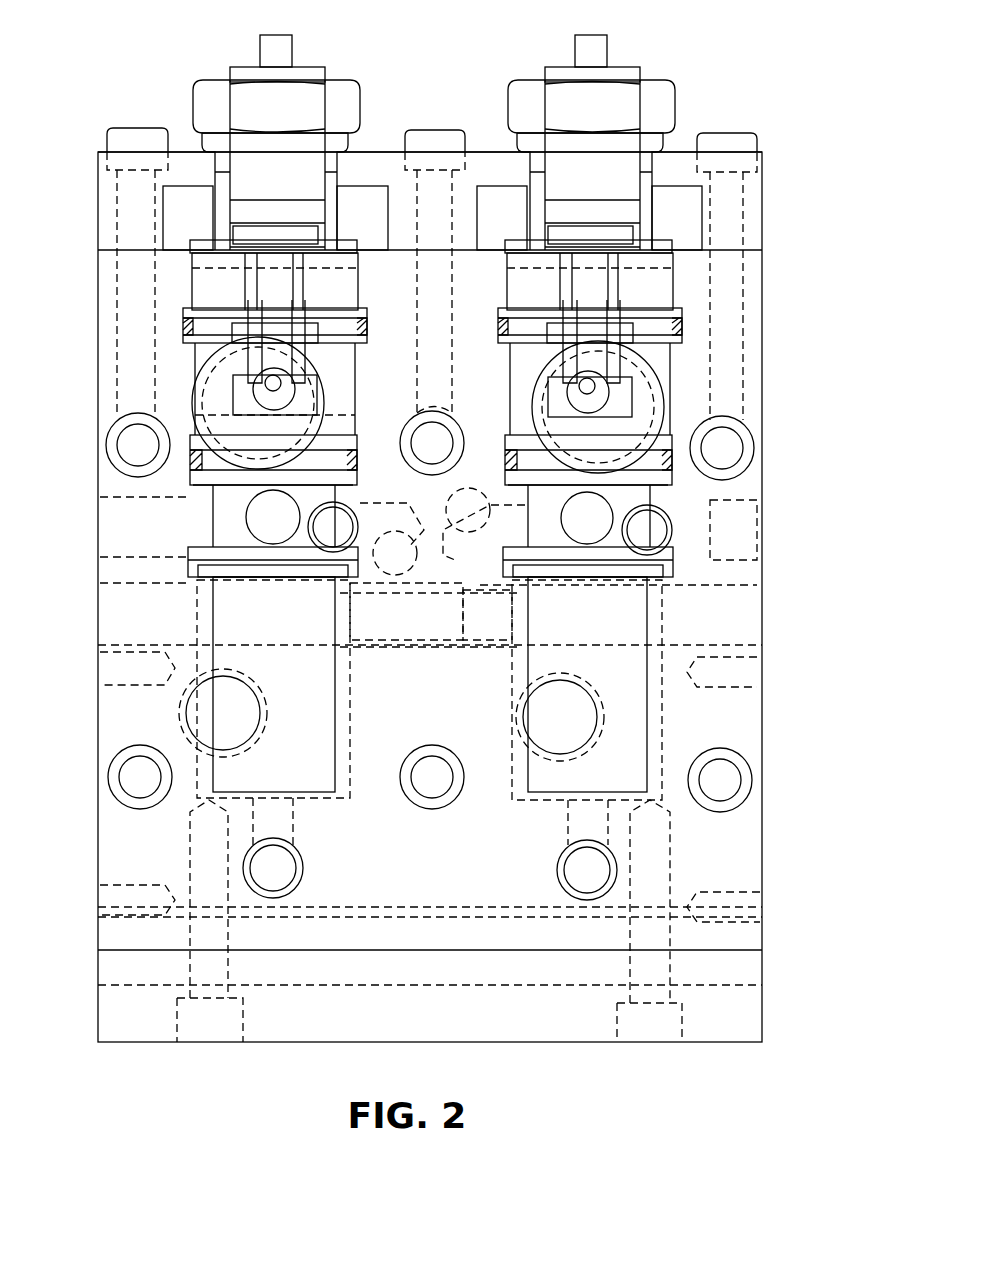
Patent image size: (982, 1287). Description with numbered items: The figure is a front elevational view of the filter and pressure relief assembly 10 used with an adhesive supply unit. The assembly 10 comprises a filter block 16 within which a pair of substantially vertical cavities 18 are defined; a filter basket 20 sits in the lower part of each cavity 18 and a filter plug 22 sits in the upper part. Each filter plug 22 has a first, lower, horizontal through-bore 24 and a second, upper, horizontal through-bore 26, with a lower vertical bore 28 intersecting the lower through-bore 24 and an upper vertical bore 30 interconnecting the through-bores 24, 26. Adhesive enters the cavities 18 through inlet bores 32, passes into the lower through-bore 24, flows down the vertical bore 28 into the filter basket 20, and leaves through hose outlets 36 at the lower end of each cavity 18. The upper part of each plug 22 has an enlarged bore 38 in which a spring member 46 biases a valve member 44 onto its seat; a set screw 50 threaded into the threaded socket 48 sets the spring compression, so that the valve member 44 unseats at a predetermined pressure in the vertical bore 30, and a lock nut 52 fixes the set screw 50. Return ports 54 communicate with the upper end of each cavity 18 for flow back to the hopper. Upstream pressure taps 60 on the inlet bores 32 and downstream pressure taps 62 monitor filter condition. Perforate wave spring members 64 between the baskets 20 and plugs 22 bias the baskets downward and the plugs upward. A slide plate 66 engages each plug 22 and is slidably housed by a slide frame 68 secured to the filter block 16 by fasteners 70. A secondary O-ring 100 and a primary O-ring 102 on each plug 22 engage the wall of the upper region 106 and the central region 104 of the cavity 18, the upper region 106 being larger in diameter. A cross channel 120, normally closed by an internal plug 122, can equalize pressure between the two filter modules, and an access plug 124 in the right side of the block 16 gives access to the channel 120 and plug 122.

The filter and pressure relief assembly 10 is at (818, 645).
The filter block 16 is at (440, 861).
The cavities 18 is at (520, 680).
The filter basket 20 is at (232, 628).
The filter plug 22 is at (215, 285).
The first, lower, horizontal through-bore 24 is at (250, 518).
The second, upper, horizontal through-bore 26 is at (300, 390).
The first, lower, vertical passageway or bore 28 is at (240, 545).
The second, upper, vertical passageway or bore 30 is at (290, 517).
The inlet bores or passageways 32 is at (325, 530).
The hose outlets 36 is at (188, 715).
The enlarged bore 38 is at (228, 265).
The valve member 44 is at (300, 405).
The spring member 46 is at (298, 290).
The threaded socket 48 is at (228, 180).
The set screw 50 is at (298, 173).
The lock nut 52 is at (345, 95).
The return ports 54 is at (240, 398).
The upstream pressure taps 60 is at (335, 535).
The downstream pressure taps 62 is at (295, 870).
The spring members 64 is at (200, 570).
The slide plate 66 is at (175, 215).
The slide frame 68 is at (371, 165).
The screw or bolt fasteners 70 is at (125, 140).
The secondary O-ring sealing member 100 is at (185, 323).
The primary O-ring sealing member 102 is at (195, 465).
The central region 104 is at (190, 490).
The upper region 106 is at (183, 353).
The cross channel 120 is at (428, 650).
The plug 122 is at (483, 625).
The access plug 124 is at (750, 635).